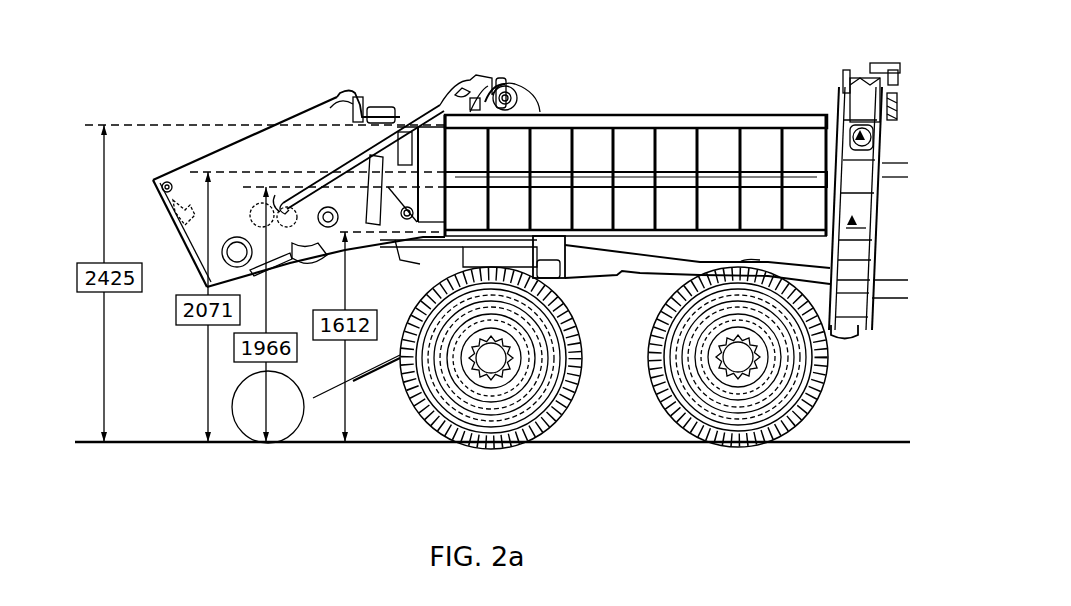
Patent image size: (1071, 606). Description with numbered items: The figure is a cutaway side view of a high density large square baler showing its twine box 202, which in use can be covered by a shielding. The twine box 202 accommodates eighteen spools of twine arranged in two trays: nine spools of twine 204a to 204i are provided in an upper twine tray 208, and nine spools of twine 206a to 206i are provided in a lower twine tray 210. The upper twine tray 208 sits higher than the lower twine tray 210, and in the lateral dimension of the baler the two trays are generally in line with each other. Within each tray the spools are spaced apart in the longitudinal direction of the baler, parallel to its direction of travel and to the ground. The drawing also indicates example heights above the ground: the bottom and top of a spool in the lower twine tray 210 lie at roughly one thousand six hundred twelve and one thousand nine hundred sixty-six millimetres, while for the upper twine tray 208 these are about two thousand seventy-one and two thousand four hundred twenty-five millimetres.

The twine box 202 is at (622, 120).
The spool of twine 204a is at (803, 145).
The spool of twine 204i is at (445, 112).
The spool of twine 206a is at (797, 220).
The spool of twine 206i is at (465, 220).
The upper twine tray 208 is at (868, 150).
The lower twine tray 210 is at (877, 243).